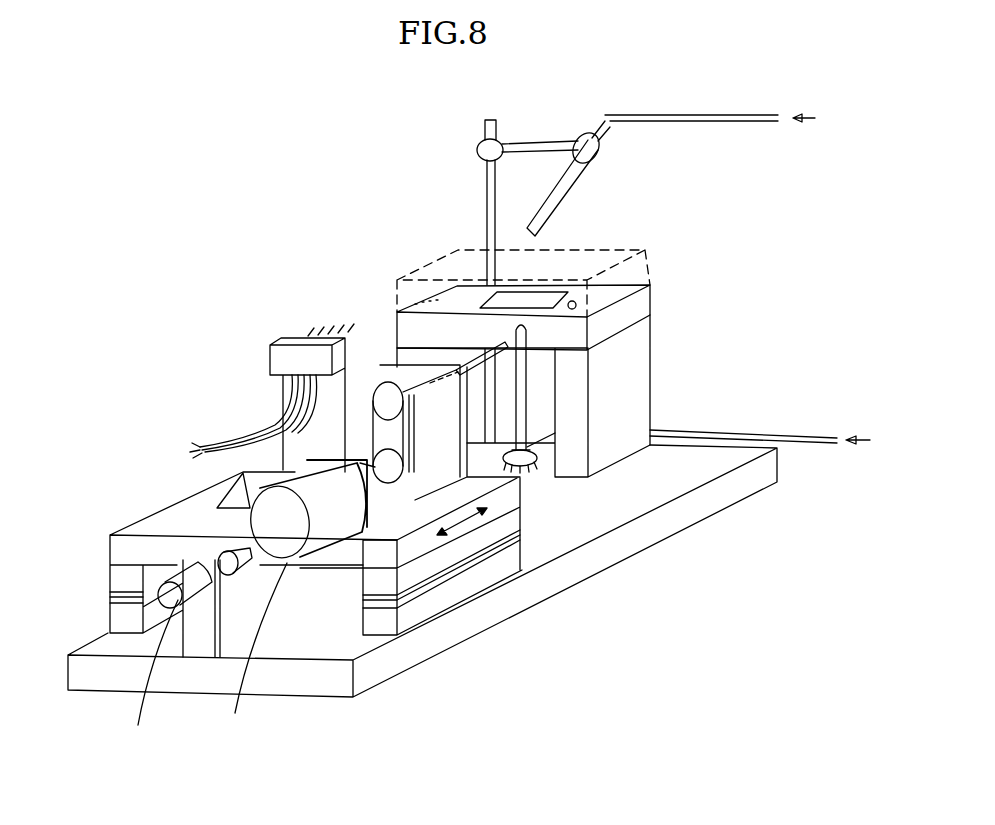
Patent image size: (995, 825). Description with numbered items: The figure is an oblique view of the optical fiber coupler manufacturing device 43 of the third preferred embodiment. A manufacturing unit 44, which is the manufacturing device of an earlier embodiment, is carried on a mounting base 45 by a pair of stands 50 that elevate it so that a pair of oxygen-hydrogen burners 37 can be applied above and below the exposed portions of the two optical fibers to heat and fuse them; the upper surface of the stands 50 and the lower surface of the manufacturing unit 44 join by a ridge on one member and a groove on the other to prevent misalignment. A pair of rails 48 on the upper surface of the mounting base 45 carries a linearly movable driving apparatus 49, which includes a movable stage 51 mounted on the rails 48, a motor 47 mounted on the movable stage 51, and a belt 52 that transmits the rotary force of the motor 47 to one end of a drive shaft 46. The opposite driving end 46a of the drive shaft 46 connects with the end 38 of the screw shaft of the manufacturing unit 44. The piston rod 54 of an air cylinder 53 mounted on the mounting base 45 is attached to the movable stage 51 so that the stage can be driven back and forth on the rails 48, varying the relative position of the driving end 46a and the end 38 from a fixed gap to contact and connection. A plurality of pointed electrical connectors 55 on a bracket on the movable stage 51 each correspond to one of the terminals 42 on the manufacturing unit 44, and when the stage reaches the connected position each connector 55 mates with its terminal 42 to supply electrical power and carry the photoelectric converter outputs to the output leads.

The oxygen-hydrogen burner 37 is at (575, 185).
The end of screw shaft 38 is at (580, 318).
The terminals 42 is at (420, 302).
The optical fiber coupler manufacturing device 43 is at (212, 320).
The manufacturing unit 44 is at (630, 243).
The mounting base 45 is at (717, 502).
The drive shaft 46 is at (403, 372).
The driving end of drive shaft 46a is at (480, 342).
The motor 47 is at (317, 537).
The rails 48 is at (112, 602).
The driving apparatus 49 is at (170, 493).
The stands 50 is at (640, 350).
The movable stage 51 is at (147, 525).
The belt 52 is at (450, 432).
The air cylinder 53 is at (173, 565).
The piston rod 54 is at (250, 567).
The pointed electrical connectors 55 is at (306, 335).